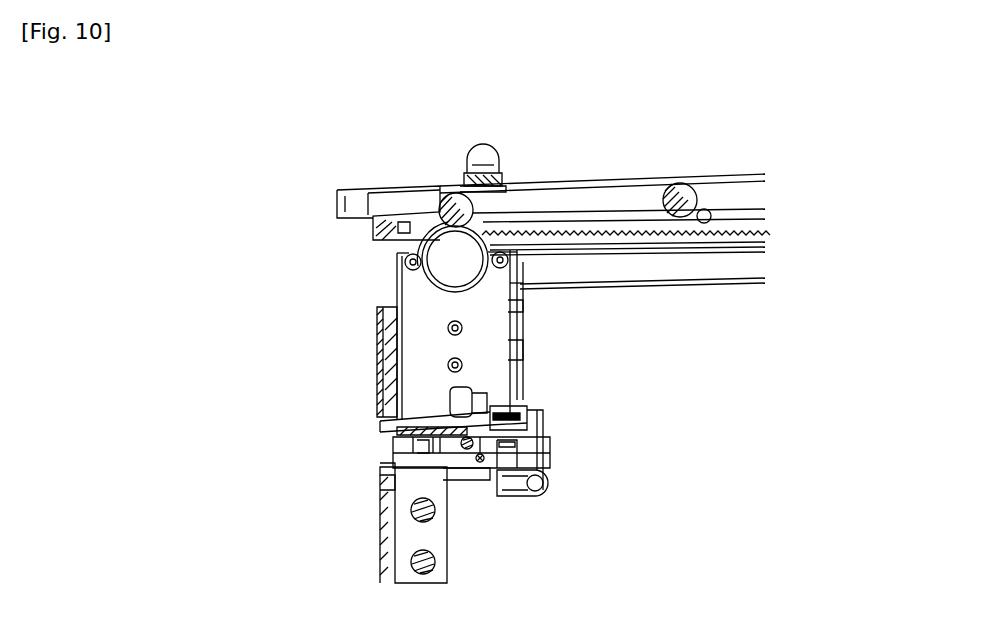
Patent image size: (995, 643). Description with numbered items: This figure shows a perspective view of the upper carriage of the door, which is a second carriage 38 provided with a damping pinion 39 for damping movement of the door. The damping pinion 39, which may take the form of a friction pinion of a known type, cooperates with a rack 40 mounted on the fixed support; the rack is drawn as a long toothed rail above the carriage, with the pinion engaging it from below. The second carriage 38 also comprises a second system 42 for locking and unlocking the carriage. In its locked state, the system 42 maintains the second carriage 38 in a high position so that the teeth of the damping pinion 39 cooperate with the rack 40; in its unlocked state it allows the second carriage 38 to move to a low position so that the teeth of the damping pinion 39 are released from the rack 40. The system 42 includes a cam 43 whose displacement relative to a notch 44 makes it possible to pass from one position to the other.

The second carriage 38 is at (421, 347).
The damping pinion 39 is at (447, 260).
The rack 40 is at (545, 225).
The second system for locking and unlocking 42 is at (494, 392).
The cam 43 is at (460, 402).
The notch 44 is at (478, 387).